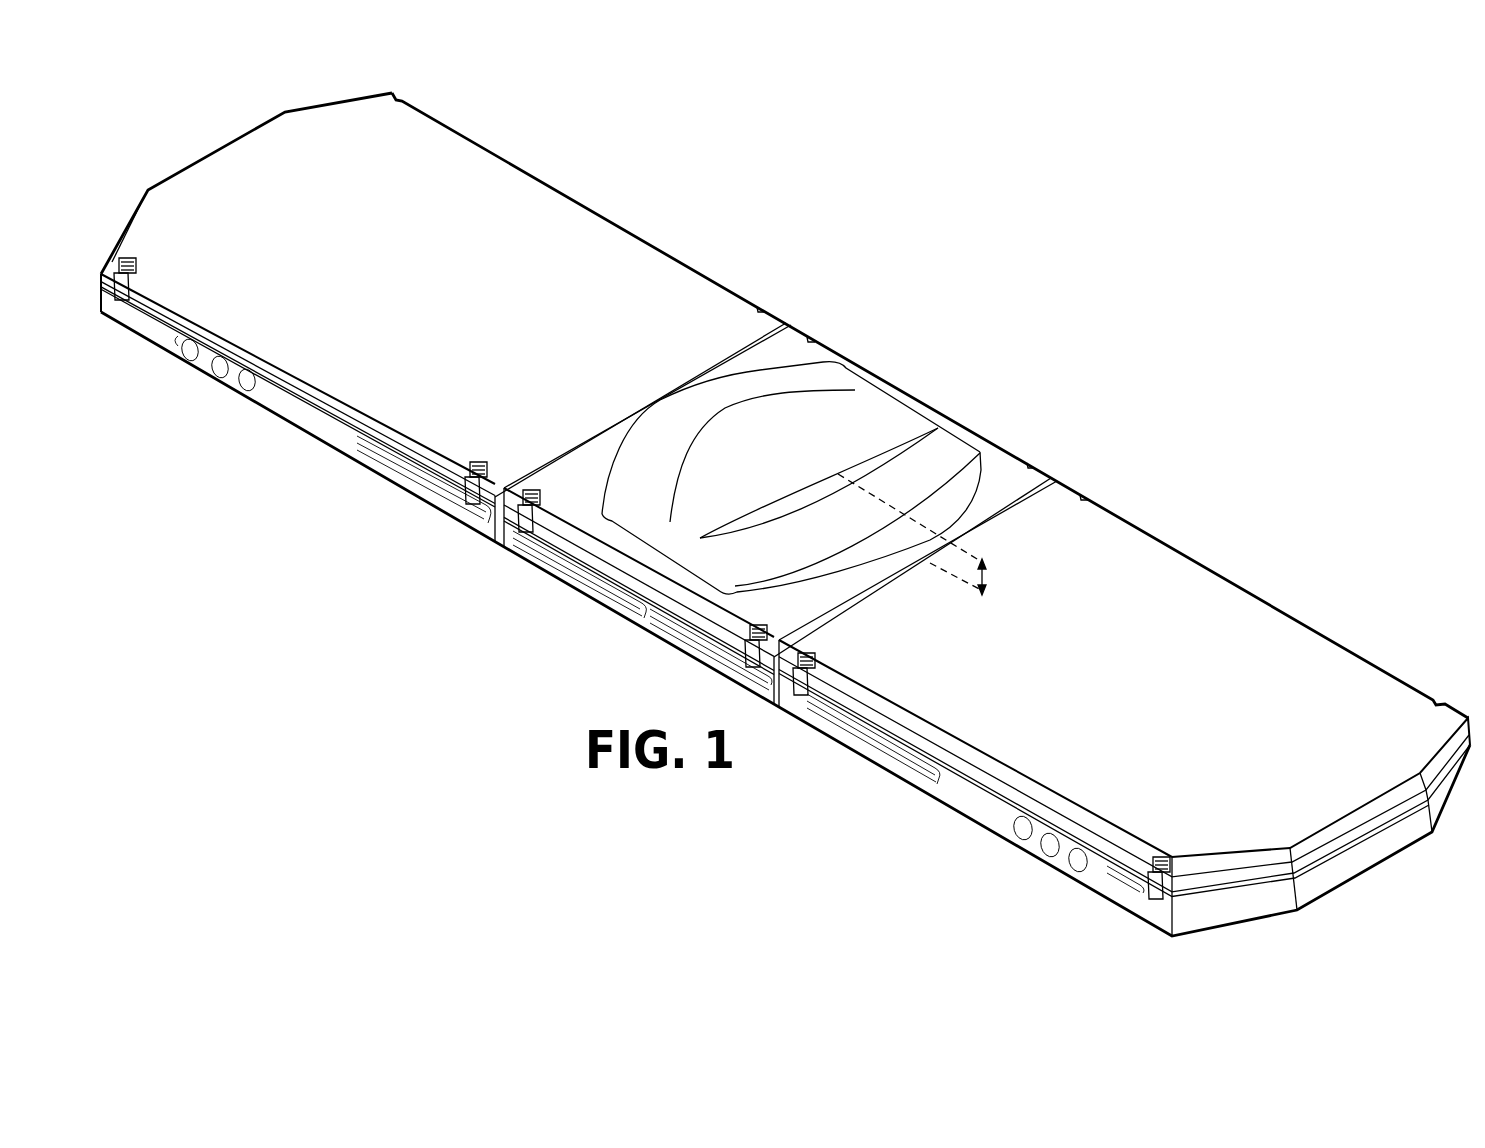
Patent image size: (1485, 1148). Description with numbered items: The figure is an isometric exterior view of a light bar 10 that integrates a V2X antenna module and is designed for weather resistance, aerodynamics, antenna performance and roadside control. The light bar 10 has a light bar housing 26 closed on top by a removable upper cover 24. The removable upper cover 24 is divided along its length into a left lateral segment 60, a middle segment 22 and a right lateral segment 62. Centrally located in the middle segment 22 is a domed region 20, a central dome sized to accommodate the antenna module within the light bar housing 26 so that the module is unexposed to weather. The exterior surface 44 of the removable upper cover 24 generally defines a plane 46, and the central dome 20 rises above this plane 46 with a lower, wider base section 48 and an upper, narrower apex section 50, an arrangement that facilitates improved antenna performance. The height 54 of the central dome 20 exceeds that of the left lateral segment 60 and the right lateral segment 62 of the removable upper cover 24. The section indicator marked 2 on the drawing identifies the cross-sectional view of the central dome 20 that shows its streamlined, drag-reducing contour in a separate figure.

The light bar 10 is at (785, 503).
The domed region 20 is at (780, 496).
The middle segment 22 is at (1124, 656).
The removable upper cover 24 is at (443, 287).
The light bar housing 26 is at (312, 440).
The exterior surface 44 is at (457, 293).
The plane 46 is at (654, 268).
The base section 48 is at (700, 405).
The apex section 50 is at (840, 473).
The height 54 is at (986, 577).
The left lateral segment 60 is at (279, 133).
The right lateral segment 62 is at (1405, 700).
The section line of FIG. 2 is at (916, 345).